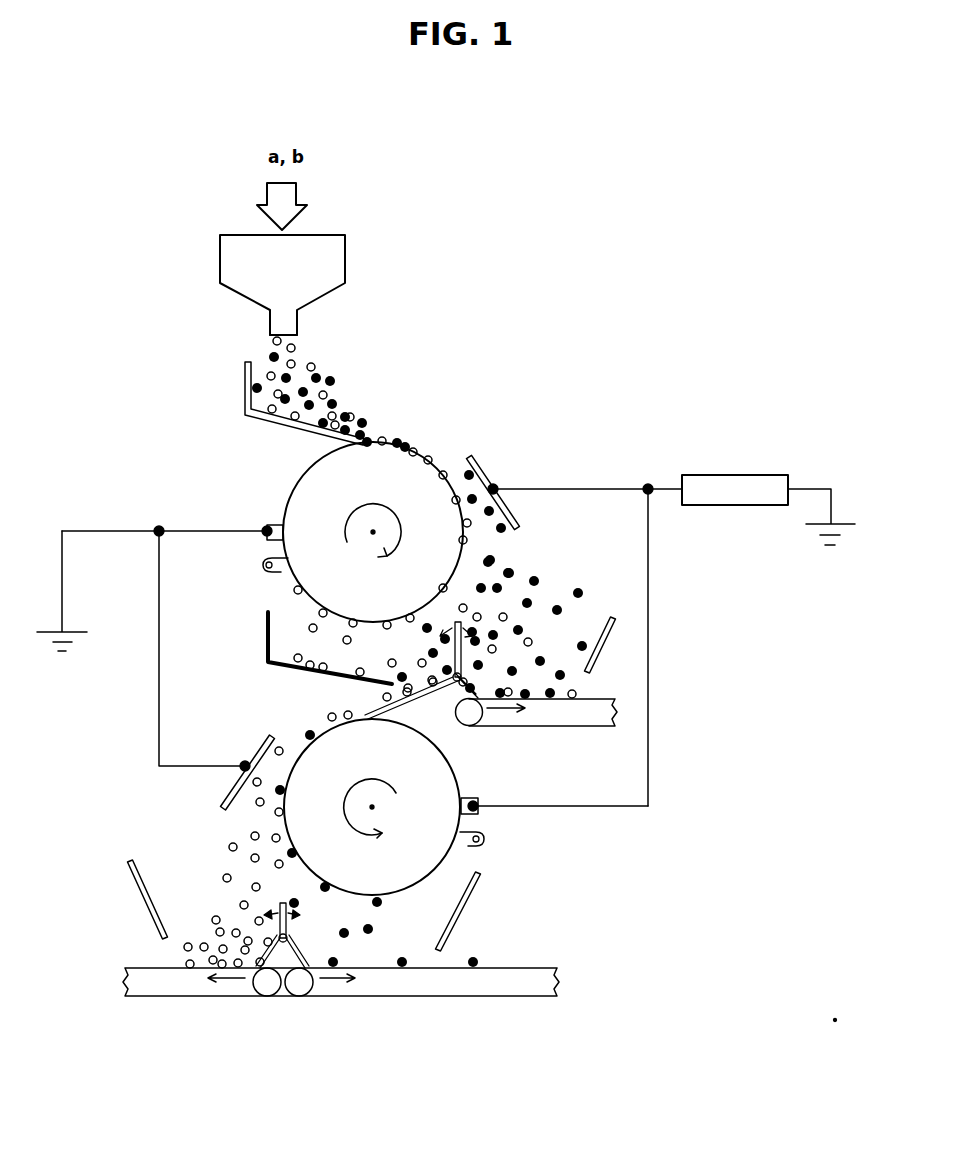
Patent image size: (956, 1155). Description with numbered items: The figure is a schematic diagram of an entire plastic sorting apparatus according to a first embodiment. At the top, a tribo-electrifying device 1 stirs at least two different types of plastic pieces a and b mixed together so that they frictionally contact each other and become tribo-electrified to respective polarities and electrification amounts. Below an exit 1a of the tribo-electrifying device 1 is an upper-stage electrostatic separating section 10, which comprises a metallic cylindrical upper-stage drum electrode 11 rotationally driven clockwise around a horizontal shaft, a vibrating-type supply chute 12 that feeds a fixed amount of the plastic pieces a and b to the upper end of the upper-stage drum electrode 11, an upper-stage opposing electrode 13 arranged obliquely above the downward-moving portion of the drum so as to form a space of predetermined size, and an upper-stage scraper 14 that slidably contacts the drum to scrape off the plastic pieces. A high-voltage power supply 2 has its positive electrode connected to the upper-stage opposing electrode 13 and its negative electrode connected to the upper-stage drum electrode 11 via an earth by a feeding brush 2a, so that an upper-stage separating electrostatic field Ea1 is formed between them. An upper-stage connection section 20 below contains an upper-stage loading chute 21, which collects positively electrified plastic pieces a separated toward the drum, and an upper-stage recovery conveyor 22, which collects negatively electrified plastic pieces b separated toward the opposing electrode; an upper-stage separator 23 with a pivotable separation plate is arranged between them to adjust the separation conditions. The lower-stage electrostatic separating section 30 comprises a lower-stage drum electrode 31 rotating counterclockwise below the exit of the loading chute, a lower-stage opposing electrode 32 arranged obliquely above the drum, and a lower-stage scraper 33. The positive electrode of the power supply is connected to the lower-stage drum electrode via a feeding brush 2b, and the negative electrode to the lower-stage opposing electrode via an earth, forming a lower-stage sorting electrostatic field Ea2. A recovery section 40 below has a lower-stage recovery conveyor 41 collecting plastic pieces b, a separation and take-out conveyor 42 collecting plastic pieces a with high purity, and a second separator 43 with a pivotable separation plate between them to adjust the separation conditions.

The tribo-electrifying device 1 is at (330, 262).
The exit 1a is at (293, 321).
The upper-stage electrostatic separating section 10 is at (420, 439).
The upper-stage drum electrode 11 is at (290, 500).
The supply chute 12 is at (292, 425).
The upper-stage opposing electrode 13 is at (480, 470).
The upper-stage scraper 14 is at (263, 568).
The high-voltage power supply 2 is at (730, 480).
The feeding brush 2a is at (277, 527).
The feeding brush 2b is at (466, 797).
The upper-stage connection section 20 is at (593, 620).
The upper-stage loading chute 21 is at (355, 676).
The upper-stage recovery conveyor 22 is at (590, 698).
The upper-stage separator 23 is at (478, 655).
The lower-stage electrostatic separating section 30 is at (253, 713).
The lower-stage drum electrode 31 is at (438, 757).
The lower-stage opposing electrode 32 is at (262, 746).
The lower-stage scraper 33 is at (484, 838).
The recovery section 40 is at (325, 1003).
The lower-stage recovery conveyor 41 is at (510, 965).
The separation and take-out conveyor 42 is at (148, 965).
The second separator 43 is at (286, 922).
The upper-stage separating electrostatic field Ea1 is at (458, 488).
The lower-stage sorting electrostatic field Ea2 is at (248, 795).
The plastic pieces a is at (185, 967).
The plastic pieces b is at (400, 962).